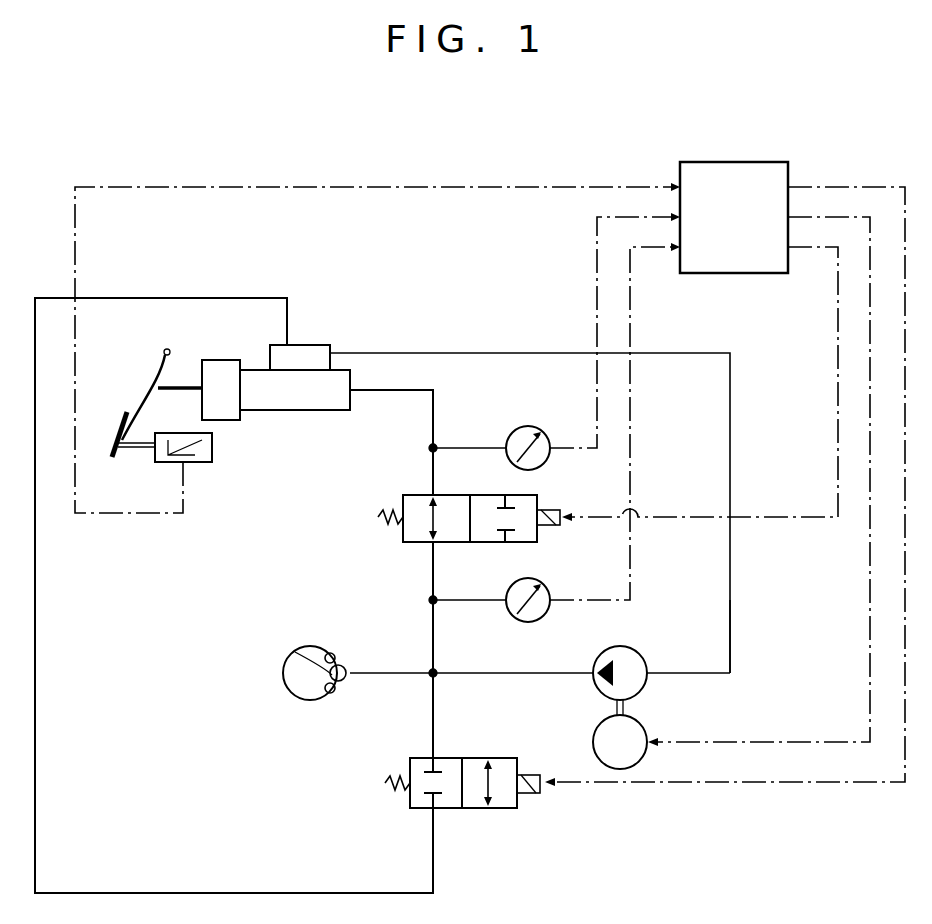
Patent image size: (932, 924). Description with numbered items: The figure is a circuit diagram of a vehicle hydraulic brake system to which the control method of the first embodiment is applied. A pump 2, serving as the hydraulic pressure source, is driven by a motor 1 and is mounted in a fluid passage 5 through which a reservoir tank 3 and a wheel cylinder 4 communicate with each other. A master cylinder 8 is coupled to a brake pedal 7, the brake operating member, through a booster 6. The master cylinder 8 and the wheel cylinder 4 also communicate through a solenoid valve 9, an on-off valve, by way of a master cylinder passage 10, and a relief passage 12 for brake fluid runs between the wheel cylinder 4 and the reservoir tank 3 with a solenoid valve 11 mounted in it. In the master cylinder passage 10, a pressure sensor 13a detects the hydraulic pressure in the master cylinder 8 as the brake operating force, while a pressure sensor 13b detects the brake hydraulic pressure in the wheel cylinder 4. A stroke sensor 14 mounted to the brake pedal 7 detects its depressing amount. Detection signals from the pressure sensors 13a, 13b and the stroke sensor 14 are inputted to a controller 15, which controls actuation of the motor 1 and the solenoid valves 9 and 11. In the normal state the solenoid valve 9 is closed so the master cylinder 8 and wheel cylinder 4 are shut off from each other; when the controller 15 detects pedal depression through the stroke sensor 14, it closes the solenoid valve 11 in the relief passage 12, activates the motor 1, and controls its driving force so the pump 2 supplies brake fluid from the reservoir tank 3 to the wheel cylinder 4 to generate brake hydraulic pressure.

The motor 1 is at (641, 730).
The pump 2 is at (633, 655).
The reservoir tank 3 is at (315, 345).
The wheel cylinder 4 is at (292, 650).
The fluid passage 5 is at (731, 638).
The booster 6 is at (227, 412).
The brake pedal 7 is at (117, 437).
The master cylinder 8 is at (308, 402).
The solenoid valve 9 is at (418, 498).
The master cylinder passage 10 is at (432, 568).
The solenoid valve 11 is at (423, 760).
The relief passage 12 is at (437, 850).
The pressure sensor 13a is at (525, 433).
The pressure sensor 13b is at (527, 580).
The stroke sensor 14 is at (205, 460).
The controller 15 is at (765, 170).